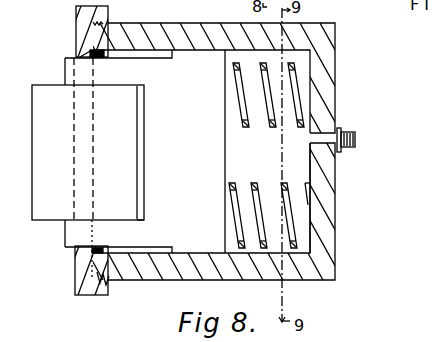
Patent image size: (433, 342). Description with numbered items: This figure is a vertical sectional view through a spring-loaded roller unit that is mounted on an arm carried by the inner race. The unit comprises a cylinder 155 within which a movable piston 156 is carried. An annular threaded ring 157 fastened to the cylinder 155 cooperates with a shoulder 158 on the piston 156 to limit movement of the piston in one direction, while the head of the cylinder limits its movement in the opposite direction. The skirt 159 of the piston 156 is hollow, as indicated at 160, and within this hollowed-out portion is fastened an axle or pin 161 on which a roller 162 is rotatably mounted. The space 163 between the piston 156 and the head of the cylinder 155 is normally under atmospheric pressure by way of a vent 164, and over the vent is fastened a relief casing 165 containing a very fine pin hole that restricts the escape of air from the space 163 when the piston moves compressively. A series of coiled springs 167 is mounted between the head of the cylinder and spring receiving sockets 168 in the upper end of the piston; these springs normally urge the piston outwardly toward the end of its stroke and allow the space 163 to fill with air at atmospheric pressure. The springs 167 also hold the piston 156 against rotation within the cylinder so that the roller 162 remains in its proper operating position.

The cylinder 155 is at (331, 36).
The piston 156 is at (76, 72).
The annular threaded ring 157 is at (84, 22).
The shoulder 158 is at (168, 247).
The skirt 159 is at (144, 220).
The hollow 160 is at (144, 181).
The axle or pin 161 is at (82, 237).
The roller 162 is at (52, 205).
The space 163 is at (313, 208).
The vent 164 is at (348, 150).
The relief casing 165 is at (354, 133).
The coiled springs 167 is at (297, 88).
The spring receiving sockets 168 is at (307, 59).